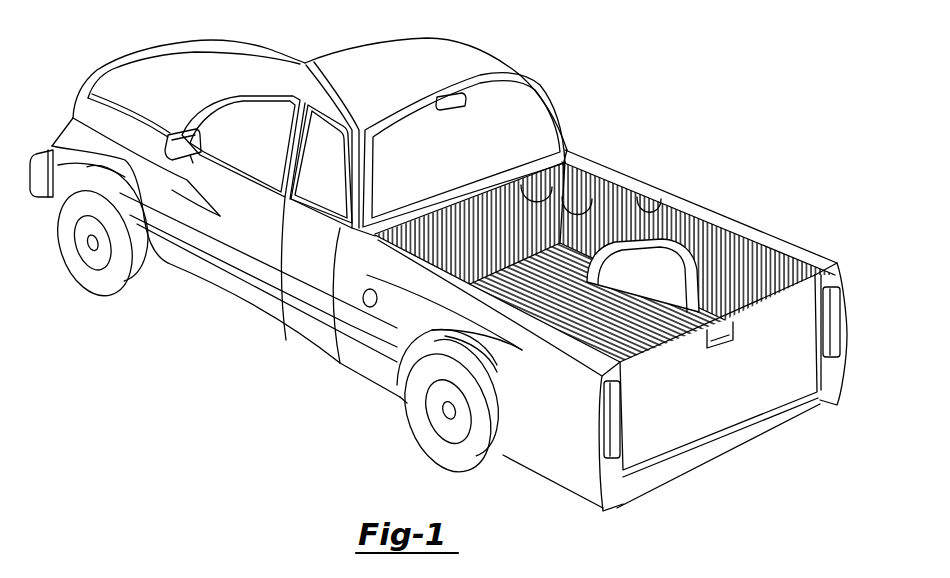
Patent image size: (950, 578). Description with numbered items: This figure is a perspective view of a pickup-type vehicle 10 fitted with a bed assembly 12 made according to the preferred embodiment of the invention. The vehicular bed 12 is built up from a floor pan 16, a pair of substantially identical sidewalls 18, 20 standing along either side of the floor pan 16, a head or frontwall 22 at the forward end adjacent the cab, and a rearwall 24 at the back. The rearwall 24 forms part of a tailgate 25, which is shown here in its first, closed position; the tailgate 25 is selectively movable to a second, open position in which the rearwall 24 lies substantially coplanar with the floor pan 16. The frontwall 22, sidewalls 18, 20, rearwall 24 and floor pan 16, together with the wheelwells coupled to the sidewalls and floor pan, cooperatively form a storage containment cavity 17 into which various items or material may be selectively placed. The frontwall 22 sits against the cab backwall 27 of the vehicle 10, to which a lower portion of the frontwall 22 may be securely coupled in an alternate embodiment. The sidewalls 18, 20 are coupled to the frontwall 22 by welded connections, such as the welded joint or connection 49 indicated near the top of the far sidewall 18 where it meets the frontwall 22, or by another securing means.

The vehicle 10 is at (555, 60).
The bed assembly 12 is at (846, 294).
The floor pan 16 is at (575, 324).
The containment cavity 17 is at (500, 268).
The sidewall 18 is at (657, 188).
The sidewall 20 is at (430, 242).
The frontwall 22 is at (565, 155).
The rearwall 24 is at (785, 327).
The tailgate 25 is at (817, 273).
The cab backwall 27 is at (508, 174).
The welded joint 49 is at (598, 188).